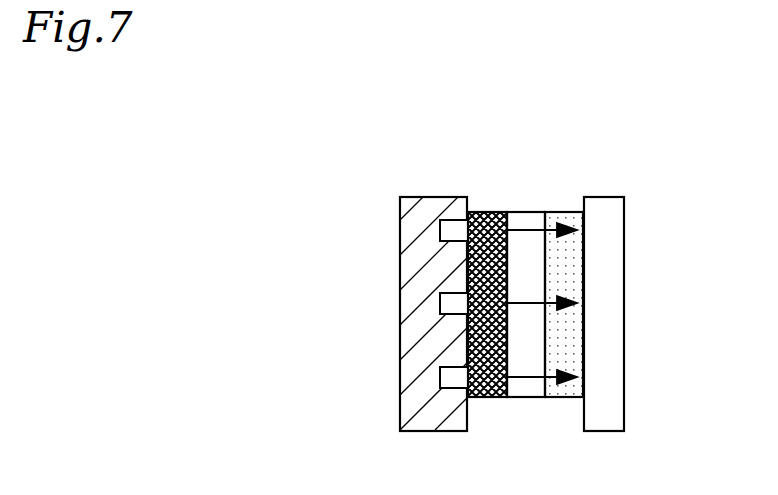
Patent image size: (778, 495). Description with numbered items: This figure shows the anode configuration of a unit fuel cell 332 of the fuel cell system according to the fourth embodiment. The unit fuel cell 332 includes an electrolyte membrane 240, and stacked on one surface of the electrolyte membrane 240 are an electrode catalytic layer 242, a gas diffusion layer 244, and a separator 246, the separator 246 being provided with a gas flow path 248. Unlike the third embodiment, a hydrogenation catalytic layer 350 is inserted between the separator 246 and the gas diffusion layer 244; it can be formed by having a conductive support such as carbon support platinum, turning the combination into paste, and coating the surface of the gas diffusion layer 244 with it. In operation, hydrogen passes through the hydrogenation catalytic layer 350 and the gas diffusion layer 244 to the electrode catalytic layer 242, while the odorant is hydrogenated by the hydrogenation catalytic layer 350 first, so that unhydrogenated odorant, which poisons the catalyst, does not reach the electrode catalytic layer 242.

The unit fuel cell 332 is at (304, 131).
The separator 246 is at (422, 290).
The gas flow path 248 is at (450, 230).
The hydrogenation catalytic layer 350 is at (478, 212).
The gas diffusion layer 244 is at (520, 212).
The electrode catalytic layer 242 is at (560, 212).
The electrolyte membrane 240 is at (610, 257).